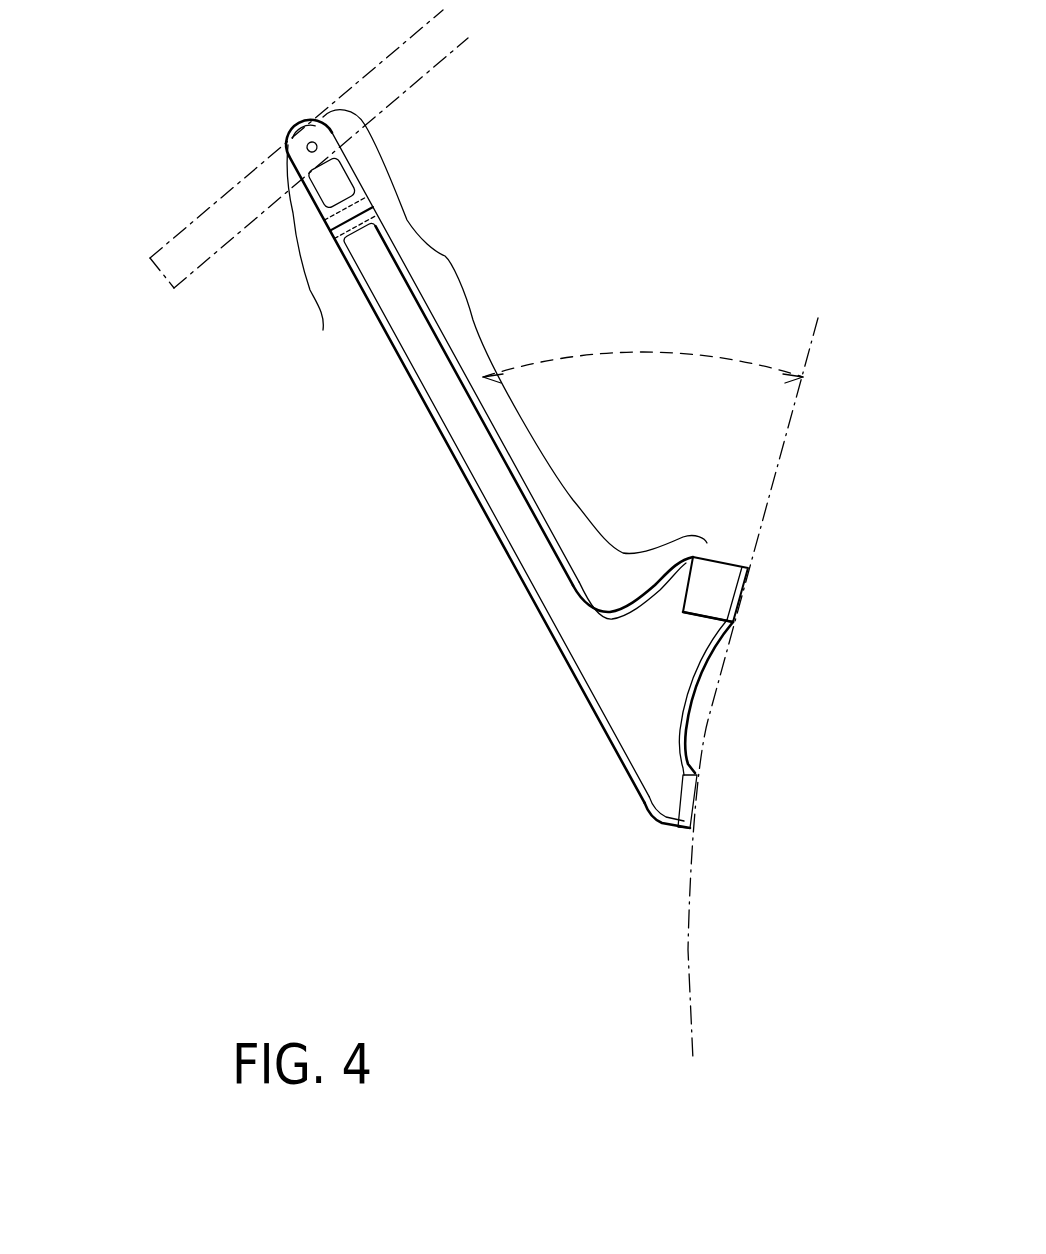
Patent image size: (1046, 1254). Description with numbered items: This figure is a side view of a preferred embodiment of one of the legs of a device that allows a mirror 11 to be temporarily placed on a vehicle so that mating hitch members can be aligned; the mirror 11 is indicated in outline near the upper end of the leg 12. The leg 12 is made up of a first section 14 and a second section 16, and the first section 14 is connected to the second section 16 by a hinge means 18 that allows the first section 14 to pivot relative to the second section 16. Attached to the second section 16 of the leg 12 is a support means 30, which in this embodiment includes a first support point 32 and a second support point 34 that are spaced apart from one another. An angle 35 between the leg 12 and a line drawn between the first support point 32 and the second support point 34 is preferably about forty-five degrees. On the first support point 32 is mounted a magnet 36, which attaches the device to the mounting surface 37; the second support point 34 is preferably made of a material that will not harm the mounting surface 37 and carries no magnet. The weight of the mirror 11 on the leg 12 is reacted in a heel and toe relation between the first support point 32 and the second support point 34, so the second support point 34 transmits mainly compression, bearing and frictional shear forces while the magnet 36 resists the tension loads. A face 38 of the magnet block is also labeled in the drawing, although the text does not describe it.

The mirror 11 is at (173, 240).
The leg 12 is at (445, 256).
The first section 14 is at (323, 330).
The second section 16 is at (540, 627).
The hinge means 18 is at (340, 226).
The support means 30 is at (653, 690).
The first support point 32 is at (737, 610).
The second support point 34 is at (697, 810).
The angle 35 is at (633, 351).
The magnet 36 is at (718, 562).
The mounting surface 37 is at (688, 990).
The block face 38 is at (752, 593).